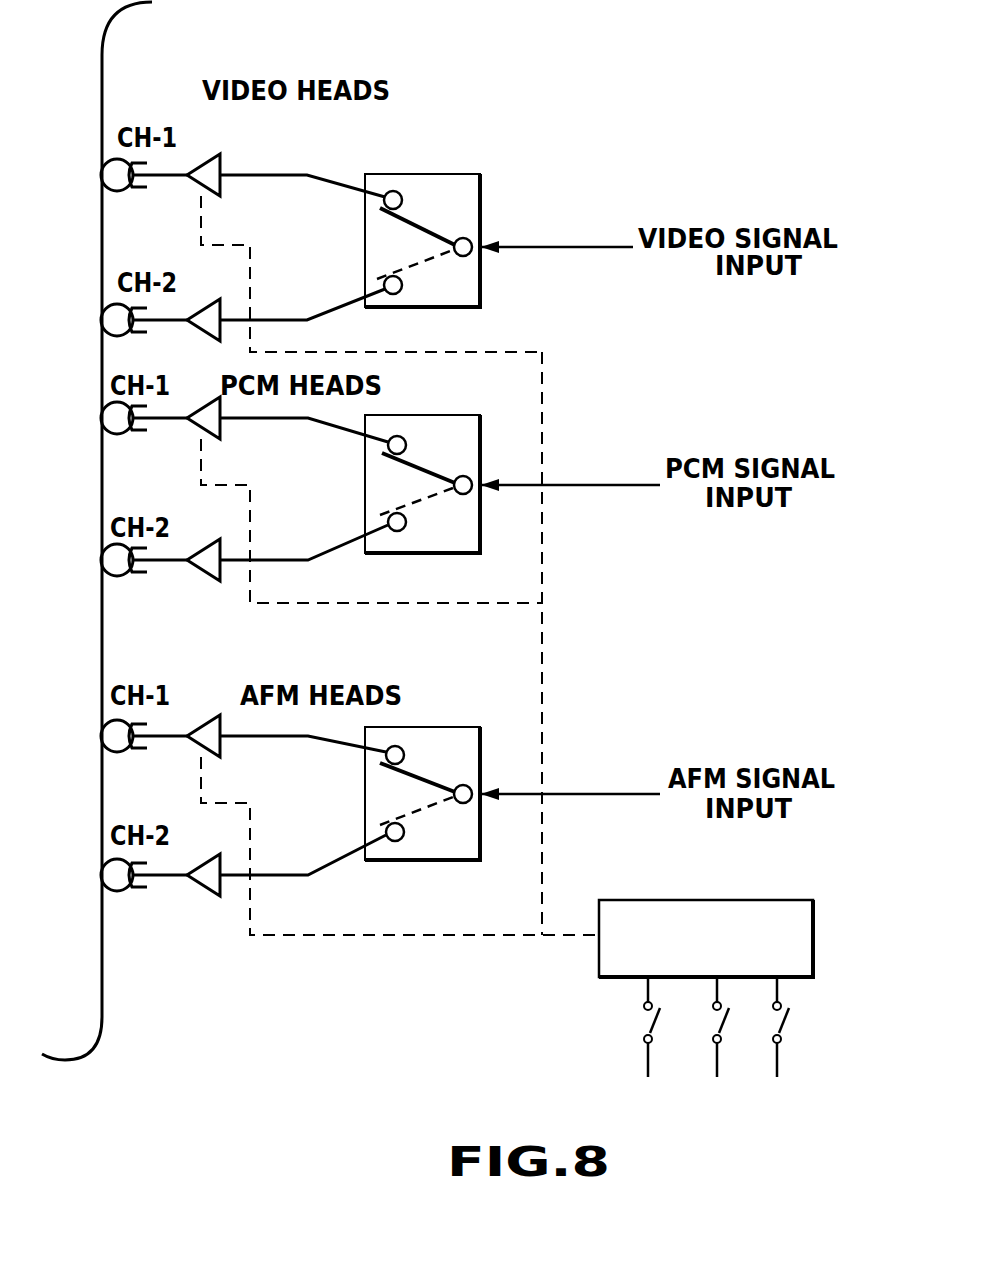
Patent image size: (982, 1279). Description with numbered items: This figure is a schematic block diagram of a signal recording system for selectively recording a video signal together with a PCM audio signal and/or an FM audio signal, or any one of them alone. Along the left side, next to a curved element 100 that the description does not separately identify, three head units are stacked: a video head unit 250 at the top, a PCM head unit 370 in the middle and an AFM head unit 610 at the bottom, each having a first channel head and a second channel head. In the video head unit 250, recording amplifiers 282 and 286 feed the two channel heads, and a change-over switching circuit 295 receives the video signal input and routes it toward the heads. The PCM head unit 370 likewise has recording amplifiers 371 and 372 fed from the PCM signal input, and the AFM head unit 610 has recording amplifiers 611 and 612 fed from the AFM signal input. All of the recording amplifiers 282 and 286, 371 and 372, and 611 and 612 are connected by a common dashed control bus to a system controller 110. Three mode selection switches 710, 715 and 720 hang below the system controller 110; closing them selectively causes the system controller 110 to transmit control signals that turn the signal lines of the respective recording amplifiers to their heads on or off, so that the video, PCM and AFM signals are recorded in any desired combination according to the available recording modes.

The head drum 100 is at (102, 77).
The video head unit 250 is at (330, 252).
The recording amplifier 282 is at (222, 160).
The recording amplifier 286 is at (204, 333).
The change-over switching circuit 295 is at (441, 174).
The PCM head unit 370 is at (330, 512).
The recording amplifier 371 is at (223, 425).
The recording amplifier 372 is at (200, 575).
The AFM head unit 610 is at (325, 810).
The recording amplifier 611 is at (206, 724).
The recording amplifier 612 is at (201, 889).
The system controller 110 is at (762, 900).
The mode selection switch 710 is at (648, 1063).
The mode selection switch 715 is at (717, 1063).
The mode selection switch 720 is at (777, 1063).